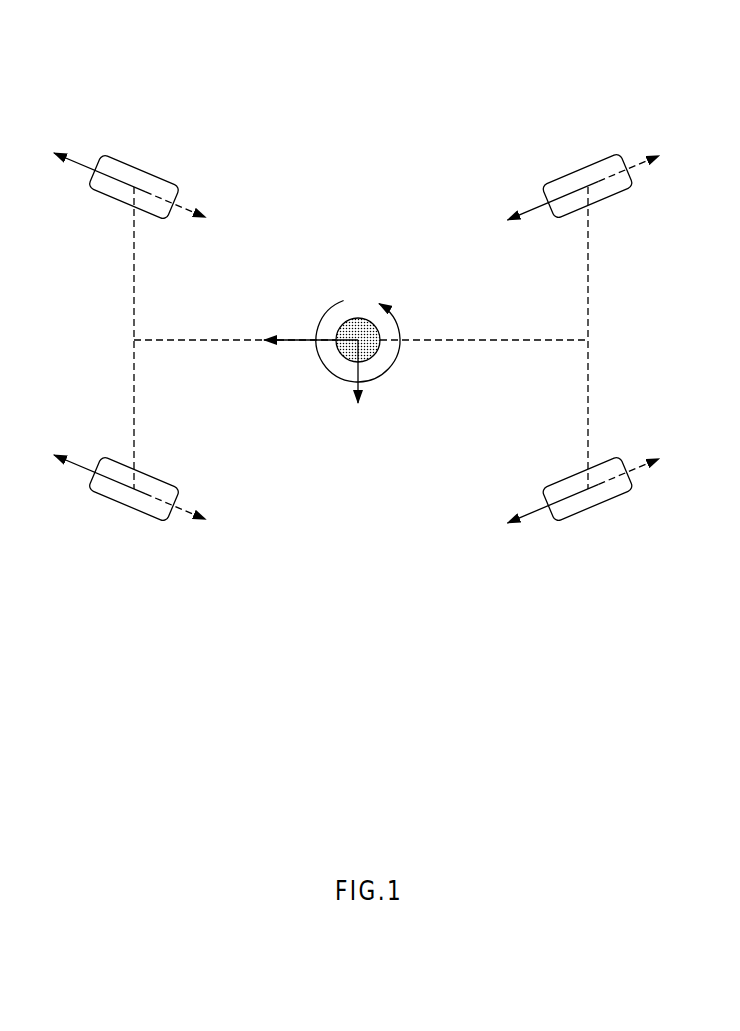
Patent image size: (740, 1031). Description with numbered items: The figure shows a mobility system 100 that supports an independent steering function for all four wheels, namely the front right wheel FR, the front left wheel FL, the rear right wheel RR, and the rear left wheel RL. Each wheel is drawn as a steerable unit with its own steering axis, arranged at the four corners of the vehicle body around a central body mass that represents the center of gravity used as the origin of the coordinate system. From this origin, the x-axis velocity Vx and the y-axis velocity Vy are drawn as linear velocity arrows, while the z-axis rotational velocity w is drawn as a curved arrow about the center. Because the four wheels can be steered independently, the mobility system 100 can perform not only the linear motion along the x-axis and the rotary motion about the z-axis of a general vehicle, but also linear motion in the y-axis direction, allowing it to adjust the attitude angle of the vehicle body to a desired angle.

The mobility system 100 is at (349, 86).
The front right wheel FR is at (130, 166).
The rear right wheel RR is at (583, 168).
The front left wheel FL is at (130, 487).
The rear left wheel RL is at (583, 491).
The x-axis velocity Vx is at (306, 329).
The y-axis velocity Vy is at (356, 386).
The z-axis rotational velocity w is at (358, 333).